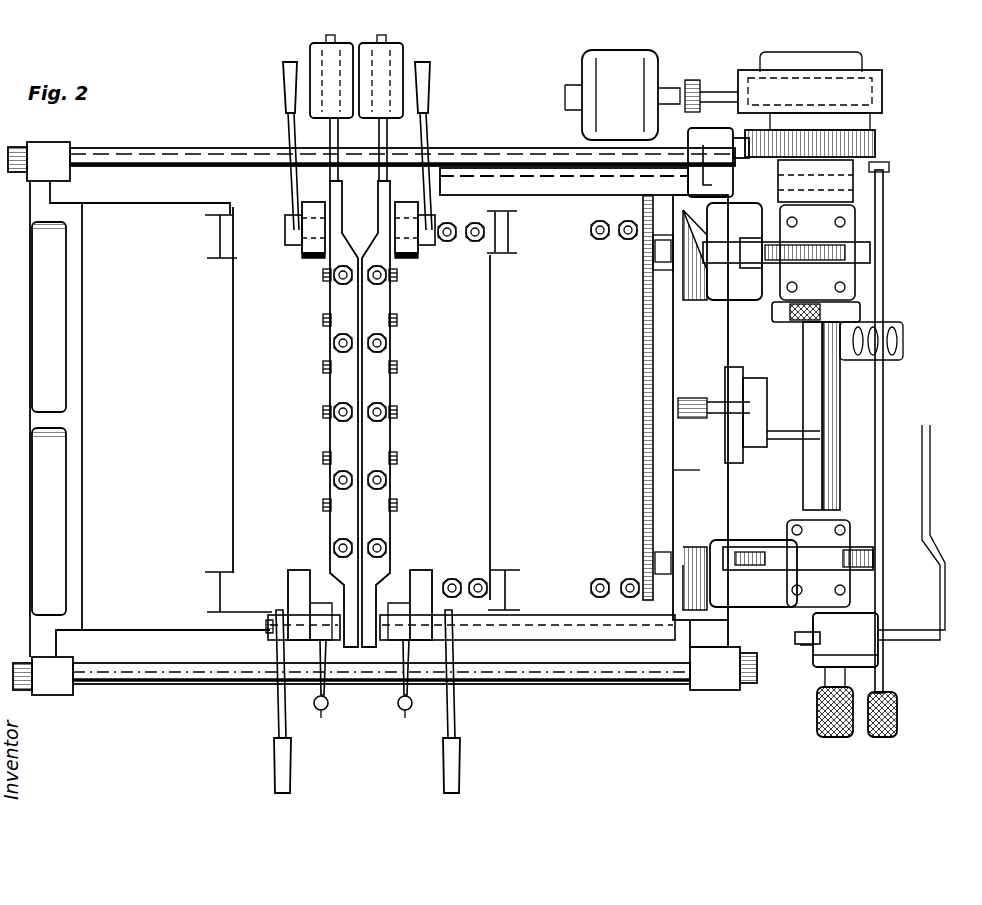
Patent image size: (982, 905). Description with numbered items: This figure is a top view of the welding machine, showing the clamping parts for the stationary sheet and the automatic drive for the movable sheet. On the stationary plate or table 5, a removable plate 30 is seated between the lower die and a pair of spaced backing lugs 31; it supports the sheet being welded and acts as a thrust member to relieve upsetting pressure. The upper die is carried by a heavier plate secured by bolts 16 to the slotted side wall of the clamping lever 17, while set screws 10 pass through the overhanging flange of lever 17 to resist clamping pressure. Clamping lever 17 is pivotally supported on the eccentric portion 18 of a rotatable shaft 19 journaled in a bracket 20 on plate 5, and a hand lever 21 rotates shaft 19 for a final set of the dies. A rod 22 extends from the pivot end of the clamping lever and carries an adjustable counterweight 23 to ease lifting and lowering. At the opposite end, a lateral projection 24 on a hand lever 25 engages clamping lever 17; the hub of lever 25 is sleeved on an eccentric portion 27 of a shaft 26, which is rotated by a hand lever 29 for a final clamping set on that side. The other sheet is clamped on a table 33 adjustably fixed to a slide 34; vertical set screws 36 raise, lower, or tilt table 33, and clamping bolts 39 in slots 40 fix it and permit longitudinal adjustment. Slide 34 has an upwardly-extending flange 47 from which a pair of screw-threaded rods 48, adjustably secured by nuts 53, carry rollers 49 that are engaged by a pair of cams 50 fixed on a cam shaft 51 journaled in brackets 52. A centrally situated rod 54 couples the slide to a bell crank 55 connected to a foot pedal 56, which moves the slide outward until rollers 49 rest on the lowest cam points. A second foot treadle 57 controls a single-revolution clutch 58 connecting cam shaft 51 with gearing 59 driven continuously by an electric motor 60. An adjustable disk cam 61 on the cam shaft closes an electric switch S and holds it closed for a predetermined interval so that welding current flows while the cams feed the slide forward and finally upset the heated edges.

The stationary plate or table 5 is at (233, 318).
The set screws 10 is at (334, 482).
The bolts 16 is at (326, 367).
The clamping lever 17 is at (330, 437).
The eccentric portion 18 is at (312, 257).
The rotatable shaft 19 is at (285, 233).
The bracket 20 is at (358, 214).
The hand lever 21 is at (290, 130).
The rod 22 is at (338, 130).
The counterweight 23 is at (310, 52).
The lateral projection 24 is at (335, 682).
The hand lever 25 is at (361, 719).
The shaft 26 is at (266, 630).
The eccentric portion 27 is at (322, 608).
The hand lever 29 is at (278, 705).
The plate (thrust member) 30 is at (233, 360).
The backing lugs 31 is at (220, 235).
The table 33 is at (567, 426).
The slide 34 is at (645, 372).
The vertical set screws 36 is at (472, 241).
The clamping bolts 39 is at (596, 225).
The slots 40 is at (508, 236).
The flange 47 is at (690, 463).
The screw-threaded rods 48 is at (724, 243).
The rollers 49 is at (750, 265).
The cams 50 is at (870, 255).
The cam shaft 51 is at (803, 348).
The brackets 52 is at (765, 612).
The nuts 53 is at (700, 272).
The rod 54 is at (716, 400).
The bell crank 55 is at (767, 410).
The foot pedal 56 is at (817, 710).
The foot treadle 57 is at (897, 710).
The clutch 58 is at (884, 180).
The gearing 59 is at (875, 146).
The electric motor 60 is at (651, 95).
The adjustable disk cam 61 is at (795, 638).
The electric switch S is at (813, 658).